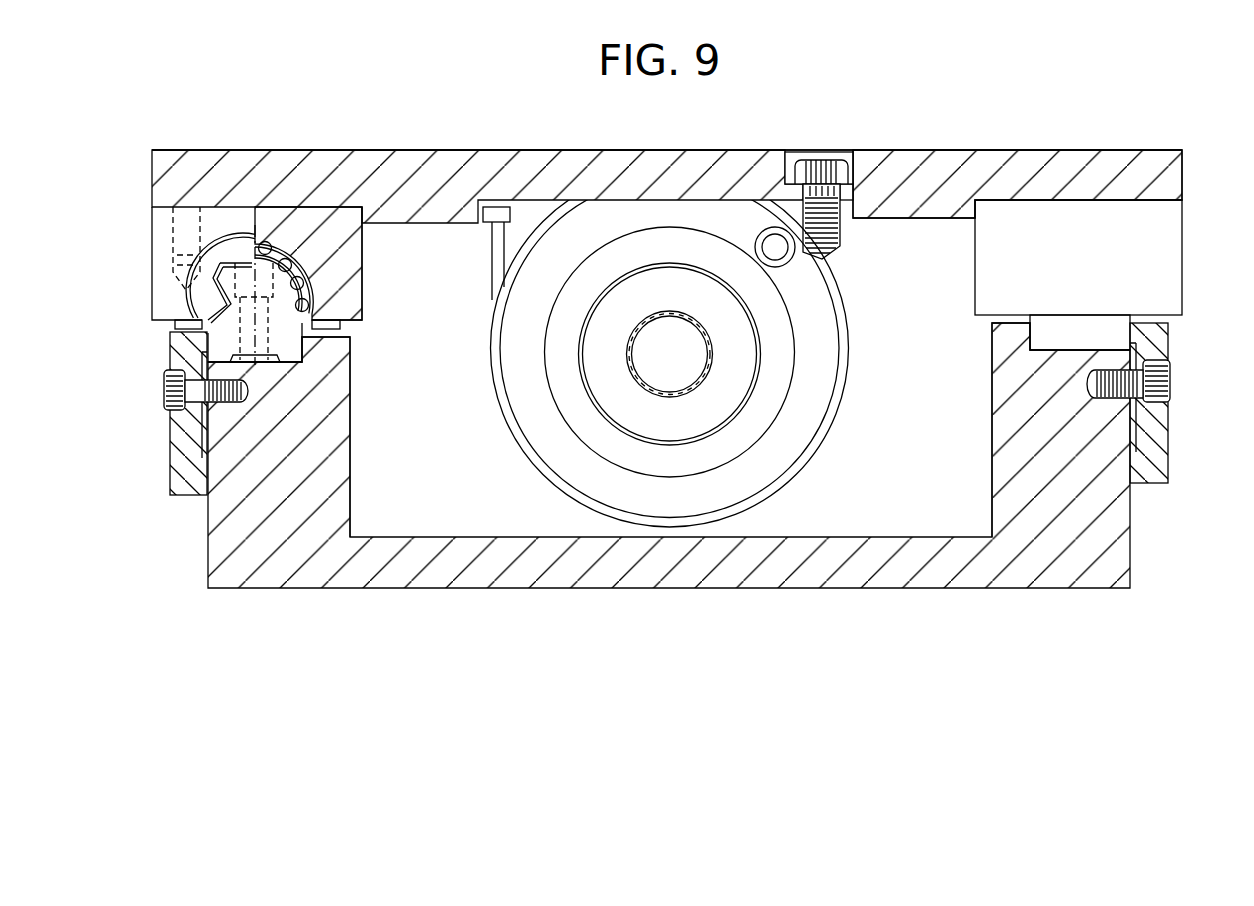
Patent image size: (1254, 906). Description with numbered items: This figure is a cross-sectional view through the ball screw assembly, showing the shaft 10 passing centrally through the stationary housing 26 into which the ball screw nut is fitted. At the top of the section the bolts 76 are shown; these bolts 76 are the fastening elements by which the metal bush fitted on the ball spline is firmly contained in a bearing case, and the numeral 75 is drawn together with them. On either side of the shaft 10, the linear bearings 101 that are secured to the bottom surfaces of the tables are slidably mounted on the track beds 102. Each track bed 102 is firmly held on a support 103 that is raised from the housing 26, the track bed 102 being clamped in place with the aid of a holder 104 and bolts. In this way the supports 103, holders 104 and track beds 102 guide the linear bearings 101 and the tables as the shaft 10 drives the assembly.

The shaft 10 is at (661, 372).
The stationary housing 26 is at (731, 567).
The cover plate 75 is at (1002, 152).
The bolts 76 is at (667, 184).
The linear bearings 101 is at (152, 236).
The track beds 102 is at (303, 350).
The support 103 is at (332, 418).
The holder 104 is at (178, 462).